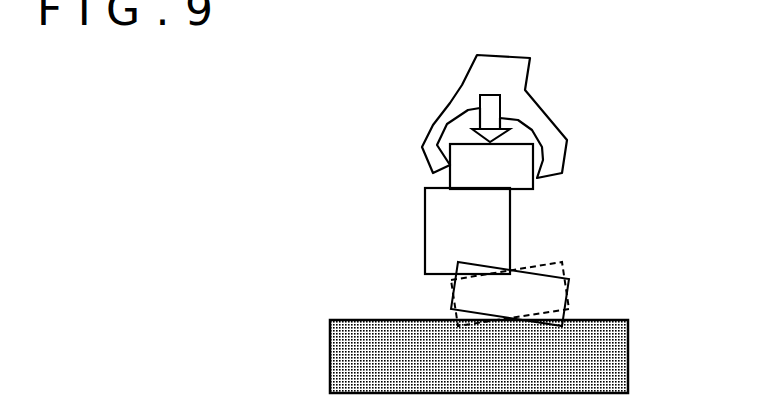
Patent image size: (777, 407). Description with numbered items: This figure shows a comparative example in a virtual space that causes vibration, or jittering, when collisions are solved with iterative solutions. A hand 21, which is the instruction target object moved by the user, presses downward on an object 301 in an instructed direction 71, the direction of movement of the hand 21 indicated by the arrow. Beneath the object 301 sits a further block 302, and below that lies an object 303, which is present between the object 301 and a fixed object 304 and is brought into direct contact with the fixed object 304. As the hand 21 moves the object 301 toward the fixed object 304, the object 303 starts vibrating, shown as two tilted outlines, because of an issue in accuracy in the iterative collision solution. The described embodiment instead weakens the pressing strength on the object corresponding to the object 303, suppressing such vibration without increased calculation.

The hand 21 is at (526, 72).
The instructed direction 71 is at (484, 101).
The object 301 is at (528, 185).
The lower block 302 is at (510, 227).
The object 303 is at (565, 283).
The fixed object 304 is at (628, 362).